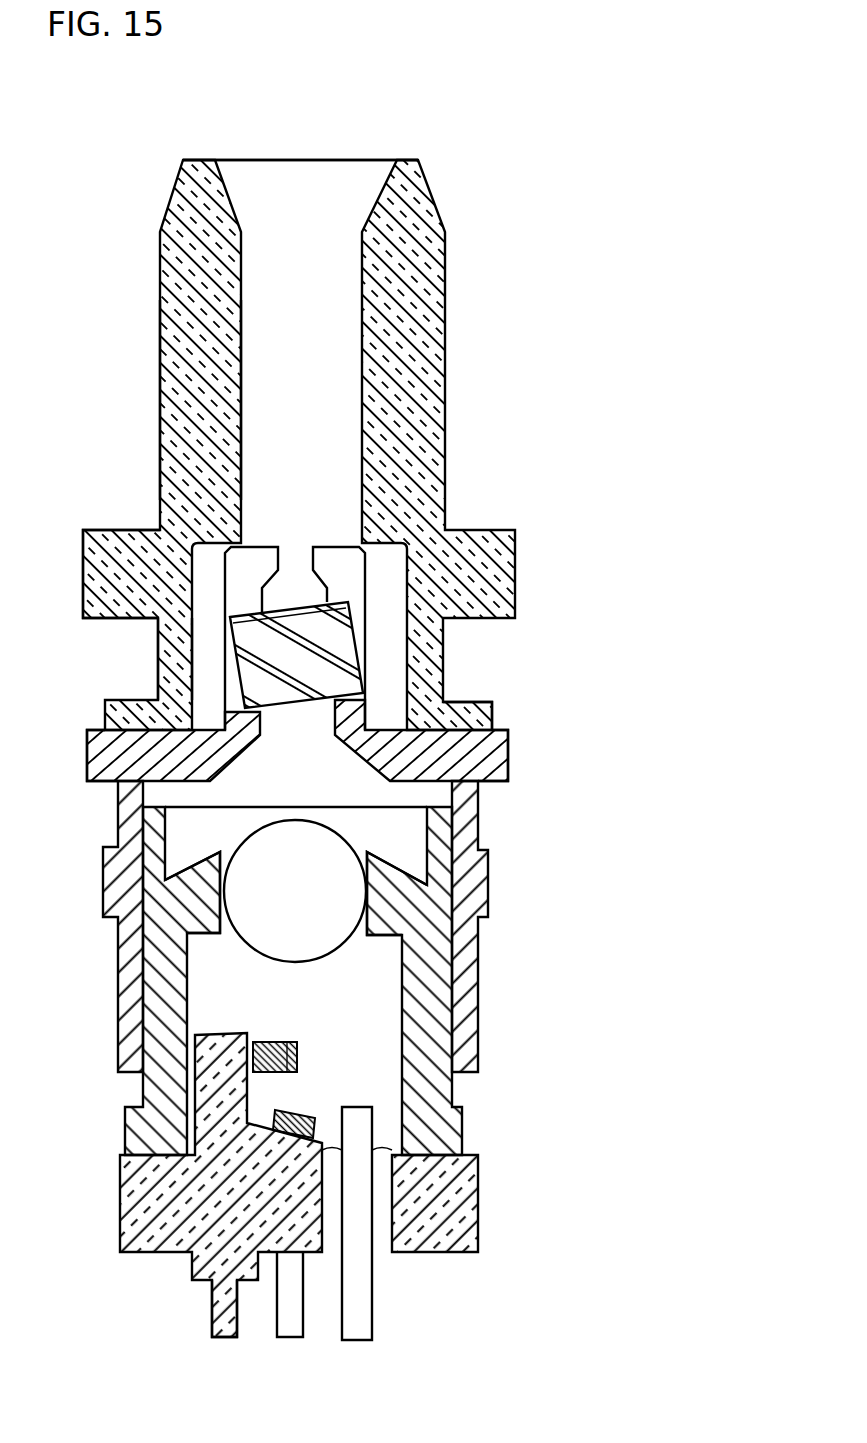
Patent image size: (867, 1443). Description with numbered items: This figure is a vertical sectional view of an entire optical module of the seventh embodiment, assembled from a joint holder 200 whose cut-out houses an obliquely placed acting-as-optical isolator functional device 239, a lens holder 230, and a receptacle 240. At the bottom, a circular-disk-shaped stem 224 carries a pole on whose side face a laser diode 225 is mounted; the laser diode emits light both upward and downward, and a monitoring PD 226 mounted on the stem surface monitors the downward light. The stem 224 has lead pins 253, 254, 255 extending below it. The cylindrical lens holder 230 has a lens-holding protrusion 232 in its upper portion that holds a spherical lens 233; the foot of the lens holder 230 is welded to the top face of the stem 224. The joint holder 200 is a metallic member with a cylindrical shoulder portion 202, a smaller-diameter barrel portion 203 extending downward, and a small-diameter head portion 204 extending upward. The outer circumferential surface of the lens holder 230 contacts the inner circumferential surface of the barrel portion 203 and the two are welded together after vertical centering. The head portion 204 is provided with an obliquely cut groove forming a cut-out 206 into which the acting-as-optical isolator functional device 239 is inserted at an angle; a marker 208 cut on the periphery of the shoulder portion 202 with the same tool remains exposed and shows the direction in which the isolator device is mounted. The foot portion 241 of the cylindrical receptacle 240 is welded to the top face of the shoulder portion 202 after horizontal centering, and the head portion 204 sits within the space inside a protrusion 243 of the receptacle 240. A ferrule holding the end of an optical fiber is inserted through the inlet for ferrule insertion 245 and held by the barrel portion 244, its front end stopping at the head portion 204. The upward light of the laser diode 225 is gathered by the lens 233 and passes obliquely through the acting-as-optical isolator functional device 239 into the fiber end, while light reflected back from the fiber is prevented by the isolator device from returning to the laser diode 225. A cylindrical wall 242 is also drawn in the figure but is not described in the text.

The joint holder 200 is at (95, 778).
The joint holder shoulder portion 202 is at (470, 753).
The barrel portion 203 is at (466, 832).
The head portion 204 is at (367, 657).
The cut-out 206 is at (320, 596).
The marker 208 is at (90, 730).
The stem 224 is at (422, 1240).
The laser diode 225 is at (291, 1052).
The monitoring PD 226 is at (300, 1112).
The lens holder 230 is at (440, 1092).
The lens-holding protrusion 232 is at (218, 934).
The spherical lens 233 is at (295, 891).
The acting-as-optical isolator functional device 239 is at (315, 637).
The receptacle 240 is at (460, 470).
The foot portion 241 is at (482, 726).
The cylindrical wall 242 is at (180, 648).
The protrusion 243 is at (105, 568).
The barrel portion 244 is at (165, 412).
The inlet for ferrule insertion 245 is at (250, 182).
The lead pin 253 is at (221, 1325).
The lead pin 254 is at (292, 1318).
The lead pin 255 is at (352, 1320).